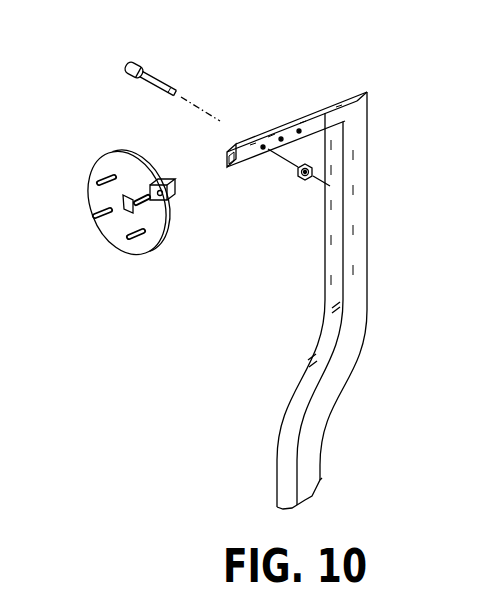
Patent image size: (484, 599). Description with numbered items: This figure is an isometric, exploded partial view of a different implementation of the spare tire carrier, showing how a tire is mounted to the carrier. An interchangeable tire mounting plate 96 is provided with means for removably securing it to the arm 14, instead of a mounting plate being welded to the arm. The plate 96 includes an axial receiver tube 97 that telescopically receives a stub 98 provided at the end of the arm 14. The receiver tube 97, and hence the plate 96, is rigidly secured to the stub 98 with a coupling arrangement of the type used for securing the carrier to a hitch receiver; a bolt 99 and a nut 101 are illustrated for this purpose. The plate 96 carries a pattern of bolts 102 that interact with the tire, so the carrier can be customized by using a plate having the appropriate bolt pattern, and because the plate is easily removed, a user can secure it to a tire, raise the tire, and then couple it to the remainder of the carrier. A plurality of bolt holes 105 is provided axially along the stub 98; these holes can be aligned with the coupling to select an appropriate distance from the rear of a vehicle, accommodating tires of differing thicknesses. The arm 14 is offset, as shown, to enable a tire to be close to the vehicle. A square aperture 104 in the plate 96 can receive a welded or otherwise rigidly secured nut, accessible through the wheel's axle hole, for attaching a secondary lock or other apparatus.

The arm 14 is at (367, 238).
The interchangeable tire mounting plate 96 is at (111, 153).
The axial receiver tube 97 is at (163, 180).
The stub 98 is at (309, 118).
The bolt 99 is at (156, 73).
The nut 101 is at (304, 180).
The bolts 102 is at (99, 183).
The square aperture 104 is at (123, 208).
The bolt holes 105 is at (281, 139).